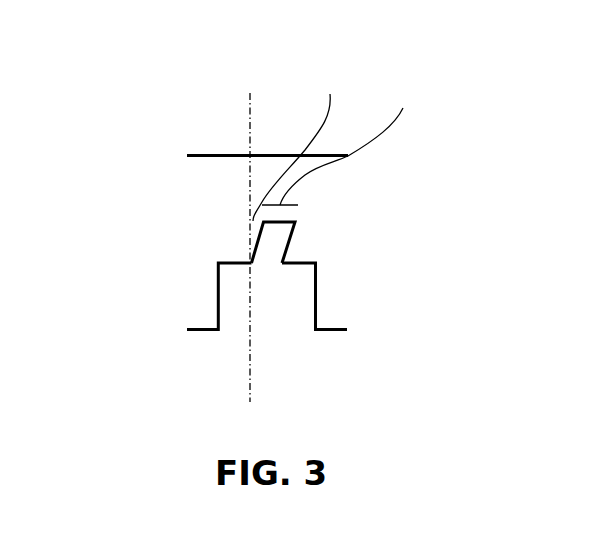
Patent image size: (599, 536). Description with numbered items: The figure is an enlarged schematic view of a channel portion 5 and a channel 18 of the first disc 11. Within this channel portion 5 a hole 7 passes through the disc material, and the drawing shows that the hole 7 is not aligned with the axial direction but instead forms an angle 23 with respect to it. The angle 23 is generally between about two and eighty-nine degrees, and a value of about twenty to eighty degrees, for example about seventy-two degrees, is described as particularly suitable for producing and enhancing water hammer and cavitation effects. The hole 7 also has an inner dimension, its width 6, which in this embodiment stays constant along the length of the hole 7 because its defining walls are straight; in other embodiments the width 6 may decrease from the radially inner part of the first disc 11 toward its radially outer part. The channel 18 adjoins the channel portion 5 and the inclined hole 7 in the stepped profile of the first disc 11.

The first disc 11 is at (207, 153).
The channel portion 5 is at (226, 180).
The angle 23 is at (304, 141).
The width 6 is at (339, 138).
The hole 7 is at (273, 242).
The channel 18 is at (232, 288).